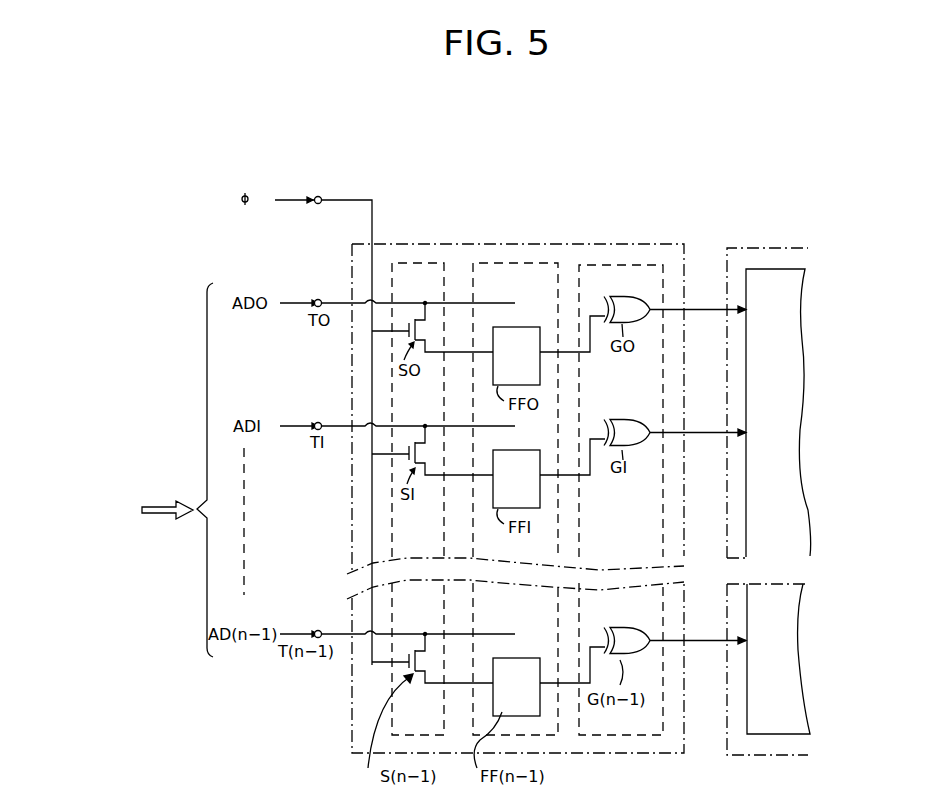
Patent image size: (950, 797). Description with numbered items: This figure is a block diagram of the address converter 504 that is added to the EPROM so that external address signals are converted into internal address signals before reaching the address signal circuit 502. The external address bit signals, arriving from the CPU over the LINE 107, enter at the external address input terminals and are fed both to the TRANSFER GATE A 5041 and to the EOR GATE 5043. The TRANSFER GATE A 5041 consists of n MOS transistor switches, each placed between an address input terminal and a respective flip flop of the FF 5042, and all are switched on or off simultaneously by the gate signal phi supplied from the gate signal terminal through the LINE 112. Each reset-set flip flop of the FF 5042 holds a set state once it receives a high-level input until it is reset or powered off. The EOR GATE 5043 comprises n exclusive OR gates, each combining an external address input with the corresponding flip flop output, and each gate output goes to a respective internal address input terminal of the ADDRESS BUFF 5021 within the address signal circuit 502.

The LINE 112 is at (283, 201).
The LINE 107 is at (153, 500).
The address converter 504 is at (655, 245).
The TRANSFER GATE A 5041 is at (419, 262).
The FF 5042 is at (518, 262).
The EOR GATE 5043 is at (612, 265).
The address signal circuit 502 is at (737, 247).
The ADDRESS BUFF 5021 is at (785, 268).